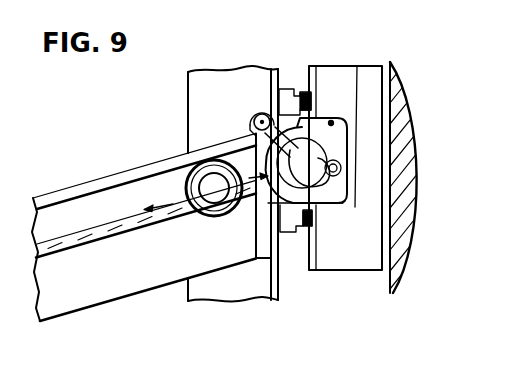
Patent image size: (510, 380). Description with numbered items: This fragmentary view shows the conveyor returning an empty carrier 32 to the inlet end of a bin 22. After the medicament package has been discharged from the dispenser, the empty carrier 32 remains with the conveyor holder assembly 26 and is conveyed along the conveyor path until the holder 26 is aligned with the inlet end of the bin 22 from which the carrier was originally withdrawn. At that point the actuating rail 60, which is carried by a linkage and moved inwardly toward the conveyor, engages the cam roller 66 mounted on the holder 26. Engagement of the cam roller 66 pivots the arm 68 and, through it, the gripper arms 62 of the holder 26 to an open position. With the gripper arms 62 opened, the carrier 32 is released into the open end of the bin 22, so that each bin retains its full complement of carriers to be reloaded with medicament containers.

The bin 22 is at (97, 295).
The conveyor holder assembly 26 is at (357, 66).
The carrier 32 is at (194, 173).
The actuating rail 60 is at (232, 80).
The gripper arm 62 is at (319, 205).
The cam roller 66 is at (253, 120).
The arm 68 is at (297, 147).